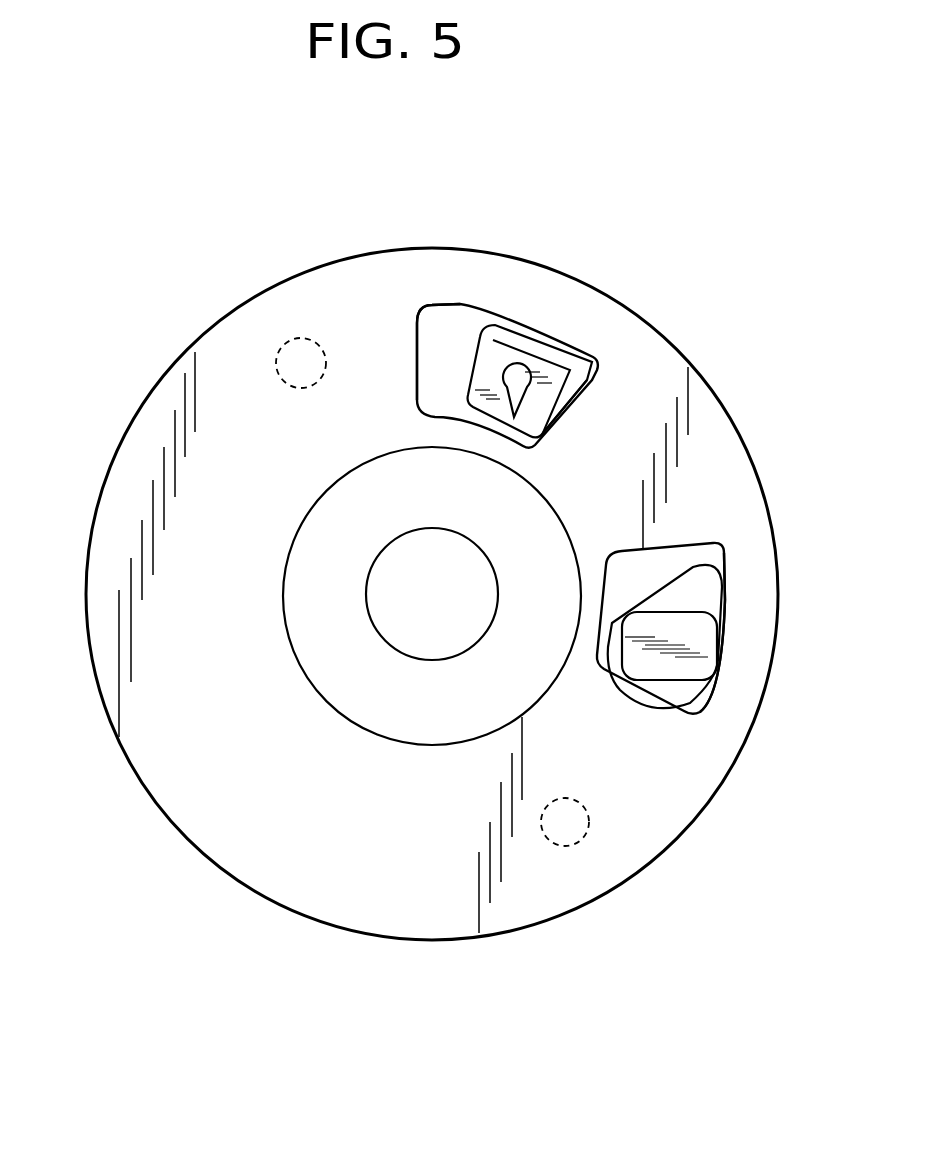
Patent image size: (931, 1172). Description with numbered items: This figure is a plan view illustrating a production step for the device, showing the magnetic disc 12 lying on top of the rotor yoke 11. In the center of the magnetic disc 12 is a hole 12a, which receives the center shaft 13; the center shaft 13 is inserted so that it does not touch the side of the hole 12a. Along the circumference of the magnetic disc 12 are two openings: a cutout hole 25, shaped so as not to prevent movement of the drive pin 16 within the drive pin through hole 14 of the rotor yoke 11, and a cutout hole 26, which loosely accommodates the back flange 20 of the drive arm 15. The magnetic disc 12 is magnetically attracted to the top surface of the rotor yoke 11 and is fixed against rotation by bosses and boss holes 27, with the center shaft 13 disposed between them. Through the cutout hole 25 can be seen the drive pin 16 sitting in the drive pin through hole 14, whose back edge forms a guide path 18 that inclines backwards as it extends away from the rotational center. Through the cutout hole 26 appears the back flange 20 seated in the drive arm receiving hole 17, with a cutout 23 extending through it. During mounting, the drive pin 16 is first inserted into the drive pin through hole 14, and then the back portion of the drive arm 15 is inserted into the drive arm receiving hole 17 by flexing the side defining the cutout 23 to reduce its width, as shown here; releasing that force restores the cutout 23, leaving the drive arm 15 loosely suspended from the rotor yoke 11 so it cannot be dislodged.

The rotor yoke 11 is at (430, 328).
The magnetic disc 12 is at (110, 468).
The hole 12a is at (373, 730).
The center shaft 13 is at (437, 625).
The drive pin through hole 14 is at (722, 614).
The drive arm 15 is at (543, 387).
The drive pin 16 is at (697, 642).
The drive arm receiving hole 17 is at (507, 333).
The guide path 18 is at (690, 585).
The back flange 20 is at (488, 362).
The cutout 23 is at (518, 377).
The cutout hole 25 is at (703, 538).
The cutout hole 26 is at (428, 372).
The boss holes 27 is at (282, 348).